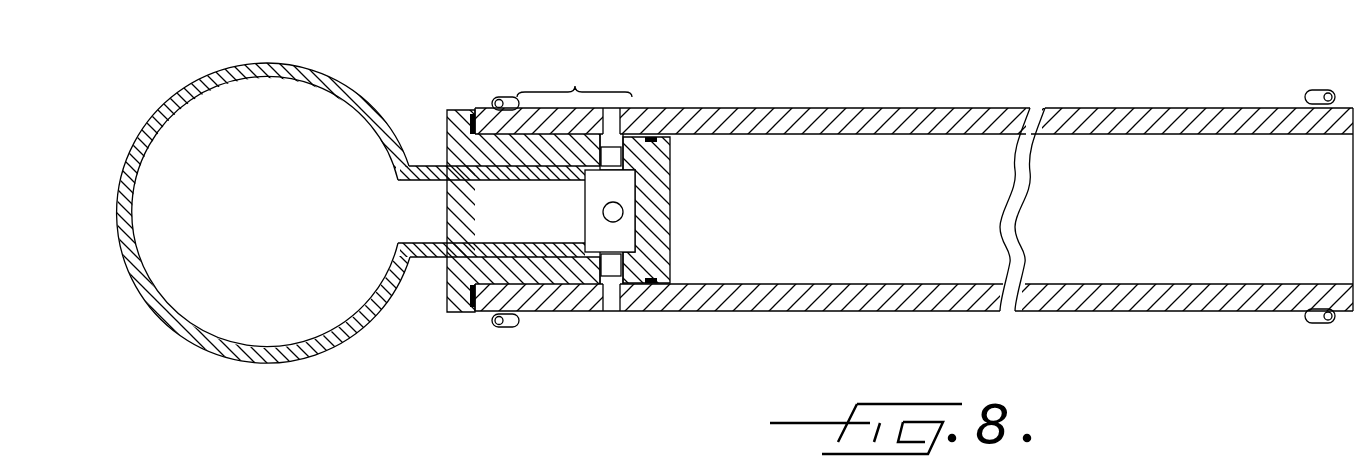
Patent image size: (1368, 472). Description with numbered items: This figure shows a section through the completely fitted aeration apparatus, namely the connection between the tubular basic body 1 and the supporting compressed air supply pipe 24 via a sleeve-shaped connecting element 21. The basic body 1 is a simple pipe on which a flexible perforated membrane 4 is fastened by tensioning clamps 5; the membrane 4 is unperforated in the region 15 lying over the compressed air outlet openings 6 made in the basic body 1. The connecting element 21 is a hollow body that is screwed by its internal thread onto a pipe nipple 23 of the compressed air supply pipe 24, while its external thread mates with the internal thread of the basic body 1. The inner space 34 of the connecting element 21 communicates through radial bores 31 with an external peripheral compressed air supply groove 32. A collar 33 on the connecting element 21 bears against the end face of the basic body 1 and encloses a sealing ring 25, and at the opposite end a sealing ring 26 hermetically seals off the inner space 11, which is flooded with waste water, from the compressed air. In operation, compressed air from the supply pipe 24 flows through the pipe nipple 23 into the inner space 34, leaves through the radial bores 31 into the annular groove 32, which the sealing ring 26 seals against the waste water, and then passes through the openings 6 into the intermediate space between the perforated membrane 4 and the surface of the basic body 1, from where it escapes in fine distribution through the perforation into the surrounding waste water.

The basic body 1 is at (1125, 306).
The perforated membrane 4 is at (862, 106).
The tensioning clamps 5 is at (1318, 90).
The compressed air outlet openings 6 is at (612, 110).
The inner space 11 is at (930, 222).
The unperforated region 15 is at (574, 80).
The connecting element 21 is at (672, 213).
The pipe nipple 23 is at (433, 258).
The compressed air supply pipe 24 is at (180, 90).
The sealing ring 25 is at (470, 314).
The sealing ring 26 is at (652, 288).
The radial bores 31 is at (618, 160).
The compressed air supply groove 32 is at (626, 140).
The collar 33 is at (455, 112).
The inner space 34 is at (530, 226).